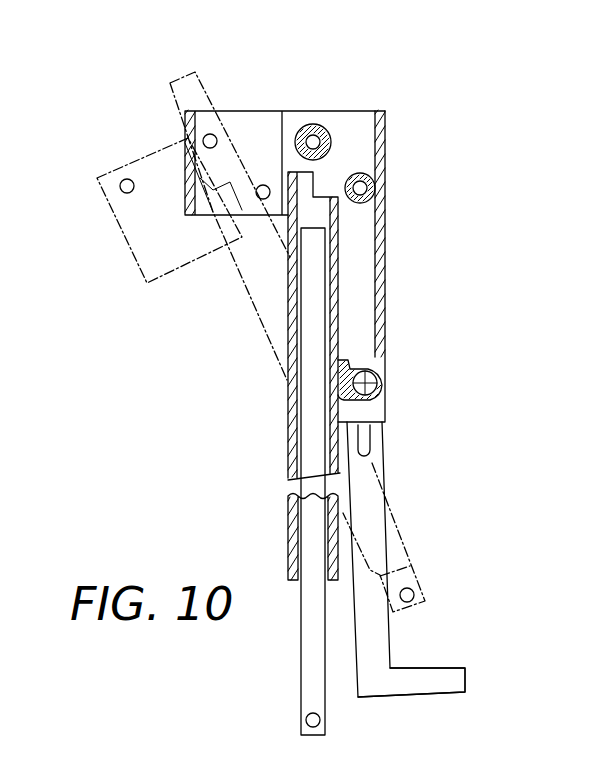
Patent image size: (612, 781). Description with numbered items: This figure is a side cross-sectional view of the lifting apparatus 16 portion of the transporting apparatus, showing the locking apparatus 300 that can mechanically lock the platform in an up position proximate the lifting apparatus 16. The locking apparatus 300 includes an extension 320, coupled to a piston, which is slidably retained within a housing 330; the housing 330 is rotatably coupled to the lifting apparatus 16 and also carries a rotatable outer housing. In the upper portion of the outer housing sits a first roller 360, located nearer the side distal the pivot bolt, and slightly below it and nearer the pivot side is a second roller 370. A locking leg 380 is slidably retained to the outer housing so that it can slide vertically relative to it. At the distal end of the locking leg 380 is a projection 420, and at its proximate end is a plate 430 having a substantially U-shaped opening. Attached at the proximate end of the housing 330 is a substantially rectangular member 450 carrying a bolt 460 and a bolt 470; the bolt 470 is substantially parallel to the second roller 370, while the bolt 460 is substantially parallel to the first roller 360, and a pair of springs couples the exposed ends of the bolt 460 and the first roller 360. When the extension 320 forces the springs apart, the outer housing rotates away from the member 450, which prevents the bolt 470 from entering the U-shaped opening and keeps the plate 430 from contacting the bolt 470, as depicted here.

The lifting apparatus 16 is at (438, 424).
The locking apparatus 300 is at (418, 321).
The extension 320 is at (305, 682).
The housing 330 is at (288, 518).
The first roller 360 is at (317, 124).
The second roller 370 is at (375, 184).
The locking leg 380 is at (372, 640).
The projection 420 is at (423, 682).
The plate 430 is at (145, 233).
The substantially rectangular member 450 is at (248, 120).
The bolt 460 is at (210, 134).
The bolt 470 is at (258, 207).